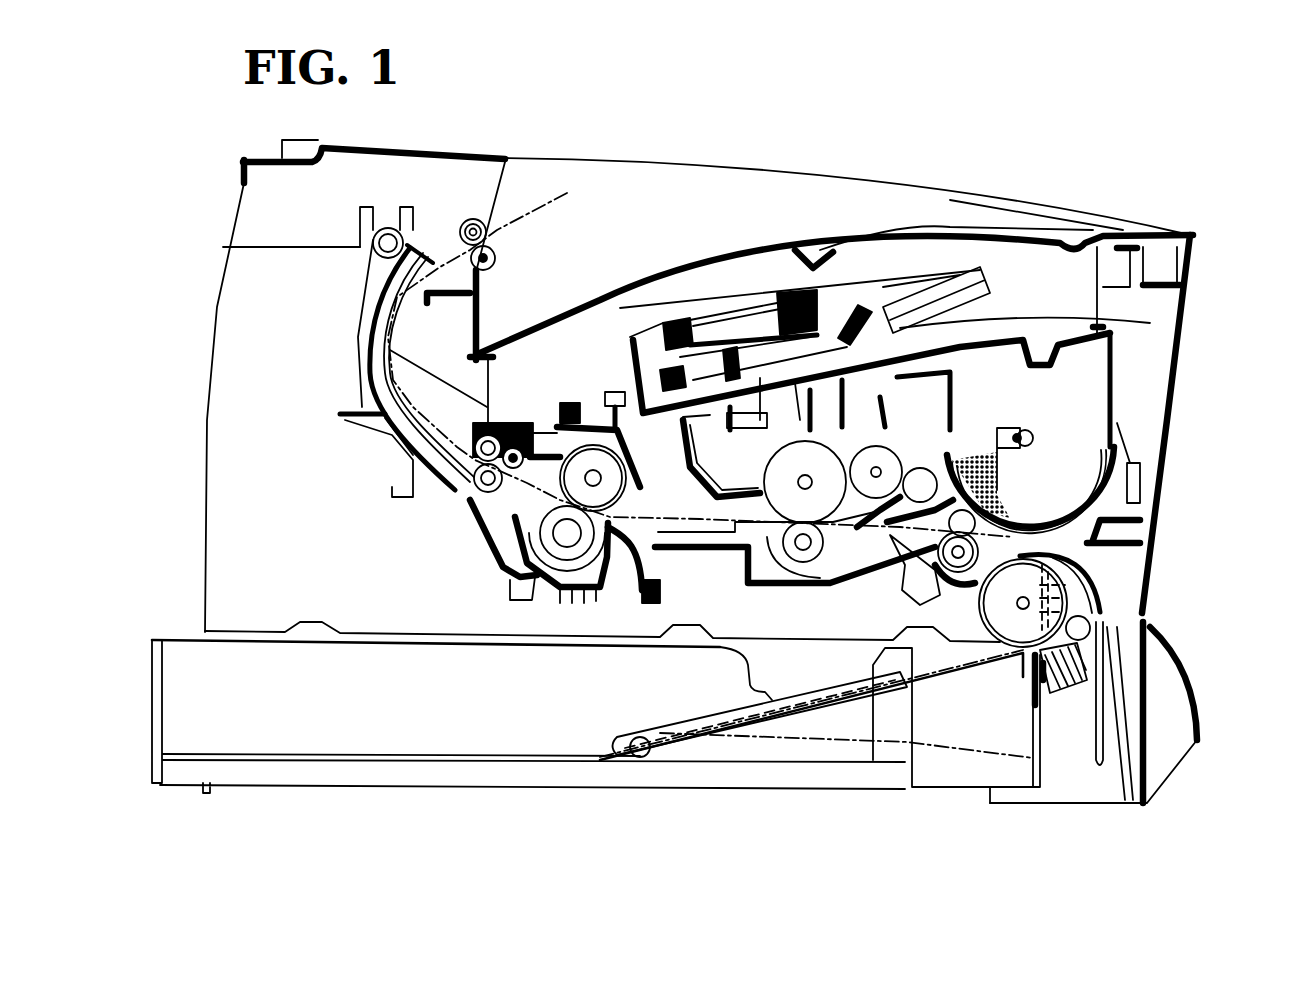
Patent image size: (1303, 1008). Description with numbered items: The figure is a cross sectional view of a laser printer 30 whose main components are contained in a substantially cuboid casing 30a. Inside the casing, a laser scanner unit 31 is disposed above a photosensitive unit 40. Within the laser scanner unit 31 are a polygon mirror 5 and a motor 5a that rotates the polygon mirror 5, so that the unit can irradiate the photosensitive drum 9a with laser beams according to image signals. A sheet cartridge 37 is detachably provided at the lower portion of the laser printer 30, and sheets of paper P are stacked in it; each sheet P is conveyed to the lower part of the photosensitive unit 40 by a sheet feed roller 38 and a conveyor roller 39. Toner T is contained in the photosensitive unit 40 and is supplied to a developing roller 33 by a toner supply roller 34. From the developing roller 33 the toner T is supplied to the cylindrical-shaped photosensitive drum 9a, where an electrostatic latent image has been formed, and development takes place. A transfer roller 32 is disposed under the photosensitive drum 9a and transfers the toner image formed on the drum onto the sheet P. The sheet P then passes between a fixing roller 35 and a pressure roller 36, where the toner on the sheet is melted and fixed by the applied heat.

The laser printer 30 is at (1113, 200).
The casing 30a is at (1190, 300).
The polygon mirror 5 is at (893, 293).
The motor 5a is at (1150, 323).
The laser scanner unit 31 is at (772, 287).
The photosensitive unit 40 is at (1118, 370).
The toner T is at (1003, 490).
The photosensitive drum 9a is at (770, 473).
The toner supply roller 34 is at (902, 465).
The developing roller 33 is at (919, 478).
The fixing roller 35 is at (607, 487).
The pressure roller 36 is at (595, 565).
The transfer roller 32 is at (797, 557).
The conveyor roller 39 is at (960, 567).
The sheet feed roller 38 is at (1053, 592).
The sheet cartridge 37 is at (523, 710).
The sheet of paper P is at (565, 192).